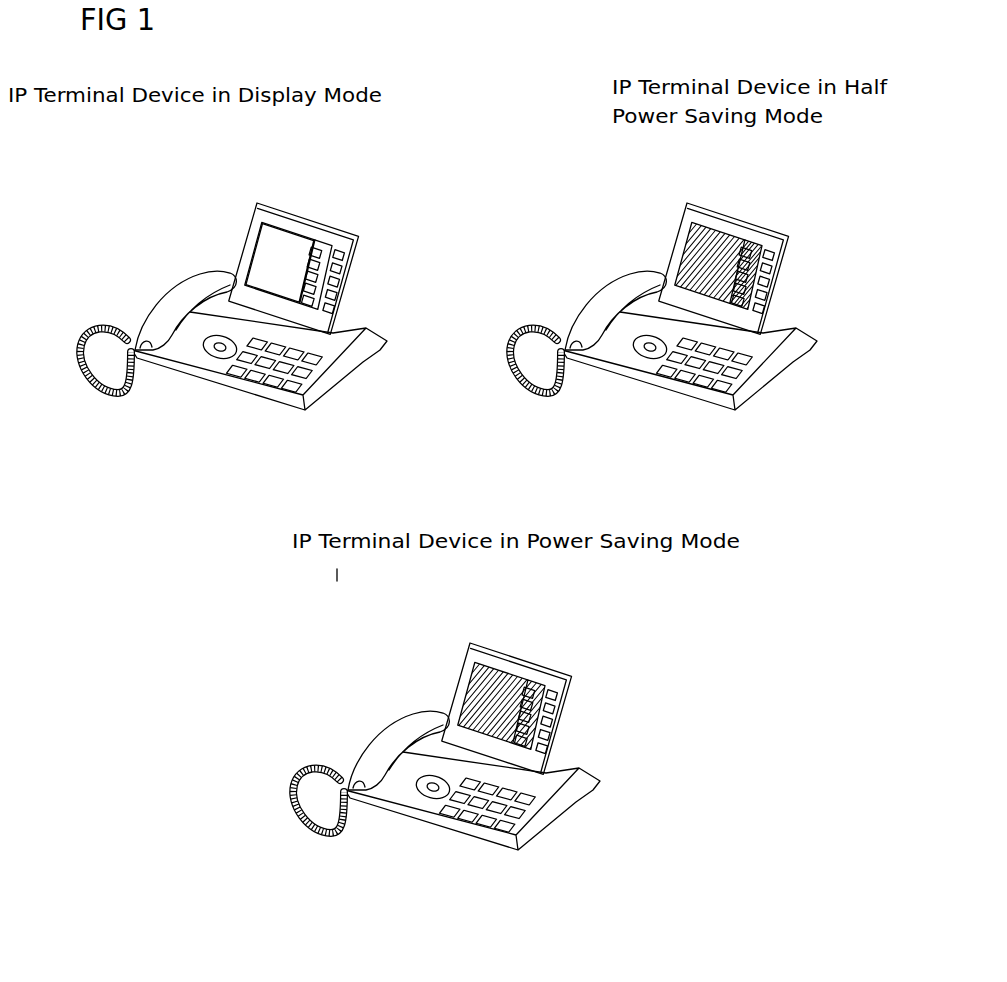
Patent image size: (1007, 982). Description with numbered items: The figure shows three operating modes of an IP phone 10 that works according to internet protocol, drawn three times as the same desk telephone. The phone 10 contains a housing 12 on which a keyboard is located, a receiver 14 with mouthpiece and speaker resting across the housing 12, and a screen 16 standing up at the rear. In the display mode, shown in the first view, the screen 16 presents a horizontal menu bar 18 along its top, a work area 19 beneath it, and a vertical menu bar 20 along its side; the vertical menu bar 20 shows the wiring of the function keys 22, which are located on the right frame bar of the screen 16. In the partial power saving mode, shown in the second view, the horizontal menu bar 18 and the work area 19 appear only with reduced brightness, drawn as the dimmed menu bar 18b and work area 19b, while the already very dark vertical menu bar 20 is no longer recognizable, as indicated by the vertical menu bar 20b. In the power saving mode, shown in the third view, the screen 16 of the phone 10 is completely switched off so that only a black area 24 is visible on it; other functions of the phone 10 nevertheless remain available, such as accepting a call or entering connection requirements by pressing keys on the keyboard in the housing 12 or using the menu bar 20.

The IP phone 10 is at (410, 204).
The housing 12 is at (213, 376).
The receiver 14 is at (165, 306).
The screen 16 is at (334, 220).
The horizontal menu bar 18 is at (257, 226).
The work area 19 is at (262, 256).
The vertical menu bar 20 is at (343, 279).
The function keys 22 is at (359, 255).
The menu bar 18b is at (687, 227).
The work area 19b is at (692, 256).
The vertical menu bar 20b is at (773, 279).
The black area 24 is at (470, 677).